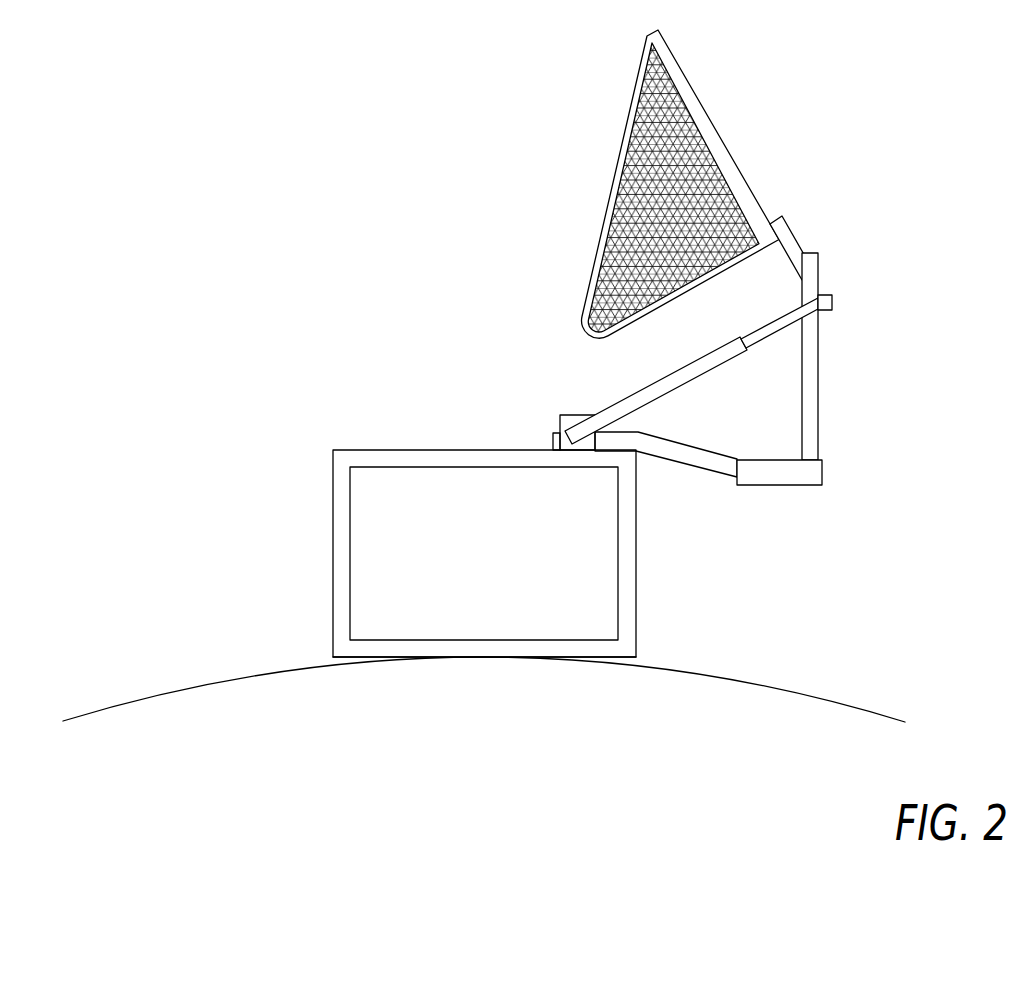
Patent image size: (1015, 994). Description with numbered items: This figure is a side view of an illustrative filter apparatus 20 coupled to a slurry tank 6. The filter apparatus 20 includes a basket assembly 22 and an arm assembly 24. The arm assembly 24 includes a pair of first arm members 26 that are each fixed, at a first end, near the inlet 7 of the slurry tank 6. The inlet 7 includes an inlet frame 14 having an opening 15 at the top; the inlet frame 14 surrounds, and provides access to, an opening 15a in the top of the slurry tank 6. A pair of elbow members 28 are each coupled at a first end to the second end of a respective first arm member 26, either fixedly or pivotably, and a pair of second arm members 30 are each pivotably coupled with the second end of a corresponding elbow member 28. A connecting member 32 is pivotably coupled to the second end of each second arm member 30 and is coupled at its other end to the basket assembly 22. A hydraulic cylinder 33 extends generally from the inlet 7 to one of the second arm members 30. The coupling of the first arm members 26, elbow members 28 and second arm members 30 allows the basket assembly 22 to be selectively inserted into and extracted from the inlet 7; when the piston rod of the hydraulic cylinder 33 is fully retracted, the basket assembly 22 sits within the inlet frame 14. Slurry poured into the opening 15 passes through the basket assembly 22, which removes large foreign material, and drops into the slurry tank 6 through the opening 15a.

The slurry tank 6 is at (753, 680).
The inlet 7 is at (468, 542).
The inlet frame 14 is at (636, 573).
The opening 15 is at (450, 393).
The opening in the top of the slurry tank 15a is at (480, 689).
The filter apparatus 20 is at (606, 302).
The basket assembly 22 is at (569, 130).
The arm assembly 24 is at (774, 374).
The first arm member 26 is at (685, 467).
The elbow member 28 is at (787, 487).
The second arm member 30 is at (820, 378).
The connecting member 32 is at (795, 238).
The hydraulic cylinder 33 is at (638, 387).